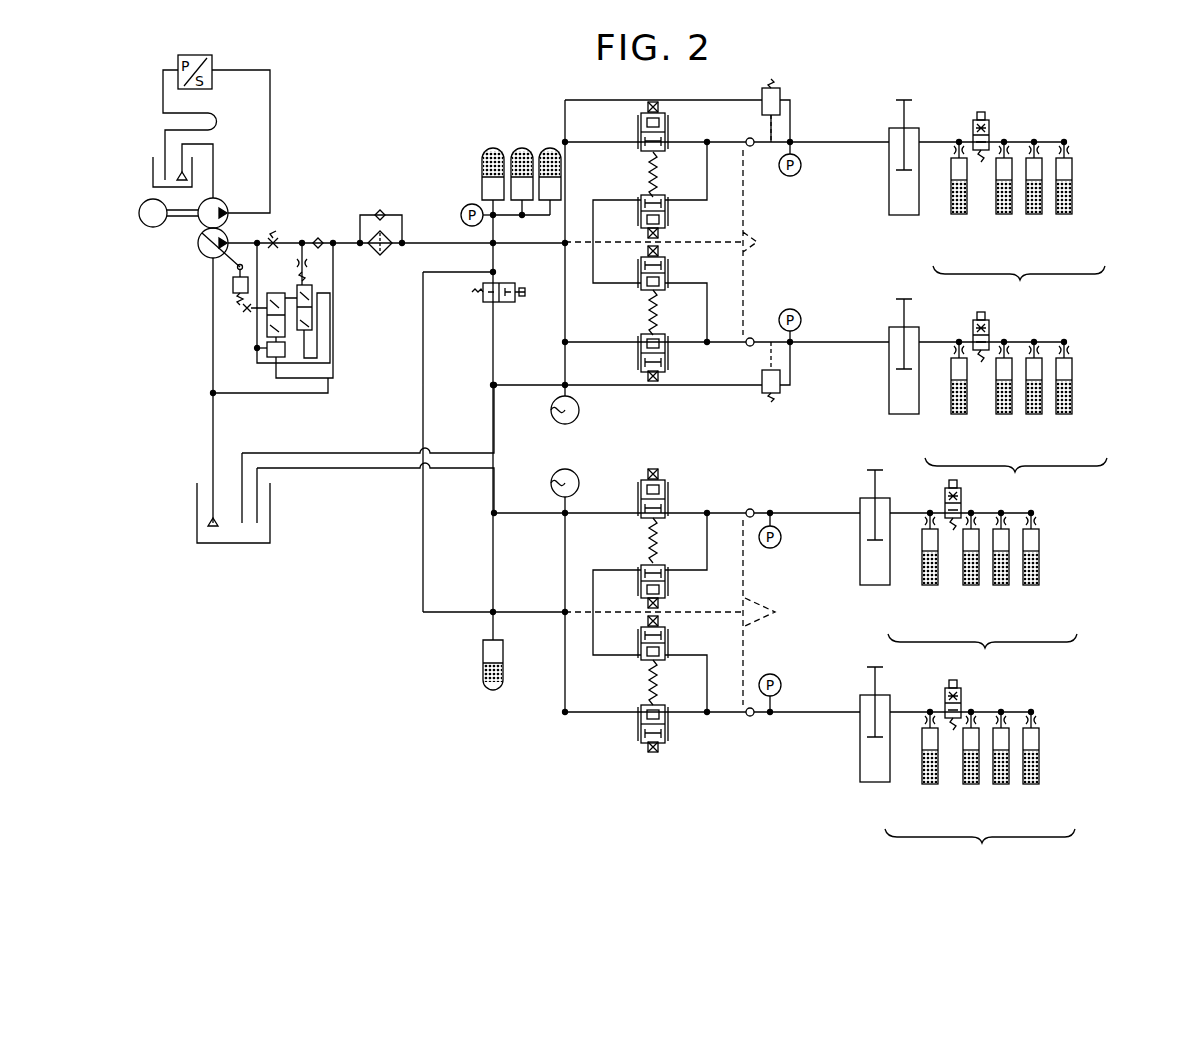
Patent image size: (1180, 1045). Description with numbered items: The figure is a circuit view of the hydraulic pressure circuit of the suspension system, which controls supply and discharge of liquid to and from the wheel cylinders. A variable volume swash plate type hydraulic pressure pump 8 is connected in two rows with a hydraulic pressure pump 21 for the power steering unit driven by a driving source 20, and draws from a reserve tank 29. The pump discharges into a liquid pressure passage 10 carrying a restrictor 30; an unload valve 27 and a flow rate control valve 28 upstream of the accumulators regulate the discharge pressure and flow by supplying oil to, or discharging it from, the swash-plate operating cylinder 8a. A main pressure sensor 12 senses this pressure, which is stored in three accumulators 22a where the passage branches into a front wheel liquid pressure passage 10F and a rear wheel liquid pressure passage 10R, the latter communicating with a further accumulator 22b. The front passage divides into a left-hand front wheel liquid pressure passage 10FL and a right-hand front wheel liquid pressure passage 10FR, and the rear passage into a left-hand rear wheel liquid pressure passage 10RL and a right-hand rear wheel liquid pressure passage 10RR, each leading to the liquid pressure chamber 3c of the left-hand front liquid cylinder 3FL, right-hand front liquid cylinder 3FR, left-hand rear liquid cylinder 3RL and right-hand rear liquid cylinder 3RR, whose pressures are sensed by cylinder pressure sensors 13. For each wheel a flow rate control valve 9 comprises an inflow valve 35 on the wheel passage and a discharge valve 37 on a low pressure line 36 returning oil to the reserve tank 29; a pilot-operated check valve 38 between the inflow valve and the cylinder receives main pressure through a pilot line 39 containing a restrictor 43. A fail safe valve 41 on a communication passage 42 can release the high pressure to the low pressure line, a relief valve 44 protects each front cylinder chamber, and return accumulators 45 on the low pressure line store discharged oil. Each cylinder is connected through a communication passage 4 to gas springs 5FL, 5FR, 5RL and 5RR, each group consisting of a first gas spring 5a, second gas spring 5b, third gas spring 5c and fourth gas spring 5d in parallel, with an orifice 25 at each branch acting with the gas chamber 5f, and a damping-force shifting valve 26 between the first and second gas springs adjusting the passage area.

The liquid pressure chamber 3c is at (889, 160).
The left-hand front liquid cylinder 3FL is at (889, 195).
The right-hand front liquid cylinder 3FR is at (889, 396).
The left-hand rear liquid cylinder 3RL is at (860, 566).
The right-hand rear liquid cylinder 3RR is at (860, 770).
The communication passage 4 is at (943, 142).
The first gas spring 5a is at (959, 215).
The second gas spring 5b is at (1004, 215).
The third gas spring 5c is at (1034, 215).
The fourth gas spring 5d is at (1064, 215).
The gas chamber 5f is at (1095, 197).
The gas springs for left front cylinder 5FL is at (1019, 286).
The gas springs for right front cylinder 5FR is at (1016, 479).
The gas springs for left rear cylinder 5RL is at (982, 656).
The gas springs for right rear cylinder 5RR is at (980, 854).
The hydraulic pressure pump 8 is at (200, 252).
The swash-plate operating cylinder 8a is at (233, 286).
The flow rate control valve 9 is at (628, 178).
The liquid pressure passage 10 is at (433, 240).
The front wheel liquid pressure passage 10F is at (592, 356).
The rear wheel liquid pressure passage 10R is at (519, 612).
The left-hand front wheel liquid pressure passage 10FL is at (833, 142).
The right-hand front wheel liquid pressure passage 10FR is at (848, 342).
The left-hand rear wheel liquid pressure passage 10RL is at (818, 513).
The right-hand rear wheel liquid pressure passage 10RR is at (825, 712).
The main pressure sensor 12 is at (466, 206).
The cylinder pressure sensor 13 is at (797, 310).
The driving source 20 is at (139, 220).
The hydraulic pressure pump for power steering unit 21 is at (224, 202).
The accumulator 22a is at (550, 148).
The accumulator 22b is at (493, 690).
The orifice 25 is at (1034, 150).
The damping-force shifting valve 26 is at (983, 112).
The unload valve 27 is at (267, 320).
The flow rate control valve 28 is at (313, 300).
The reserve tank 29 is at (272, 531).
The restrictor 30 is at (278, 238).
The inflow valve 35 is at (668, 216).
The low pressure line 36 is at (494, 426).
The discharge valve 37 is at (668, 127).
The check valve 38 is at (751, 150).
The pilot line 39 is at (694, 427).
The fail safe valve 41 is at (506, 303).
The communication passage 42 is at (492, 334).
The restrictor 43 is at (722, 238).
The relief valve 44 is at (780, 92).
The return accumulator 45 is at (580, 418).